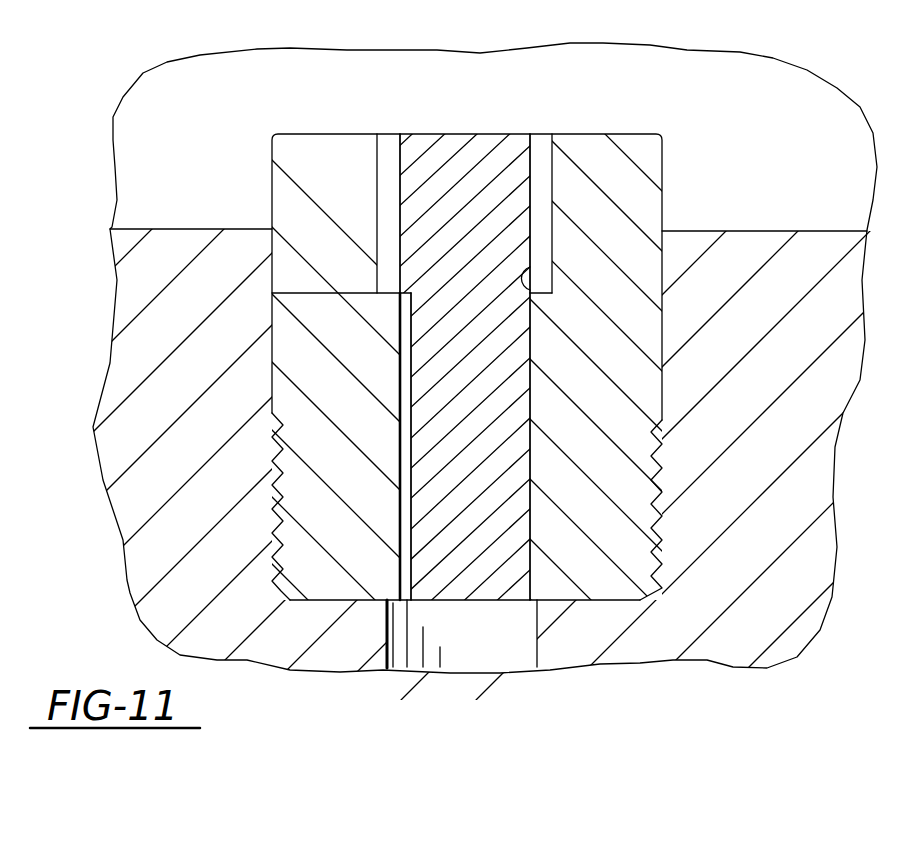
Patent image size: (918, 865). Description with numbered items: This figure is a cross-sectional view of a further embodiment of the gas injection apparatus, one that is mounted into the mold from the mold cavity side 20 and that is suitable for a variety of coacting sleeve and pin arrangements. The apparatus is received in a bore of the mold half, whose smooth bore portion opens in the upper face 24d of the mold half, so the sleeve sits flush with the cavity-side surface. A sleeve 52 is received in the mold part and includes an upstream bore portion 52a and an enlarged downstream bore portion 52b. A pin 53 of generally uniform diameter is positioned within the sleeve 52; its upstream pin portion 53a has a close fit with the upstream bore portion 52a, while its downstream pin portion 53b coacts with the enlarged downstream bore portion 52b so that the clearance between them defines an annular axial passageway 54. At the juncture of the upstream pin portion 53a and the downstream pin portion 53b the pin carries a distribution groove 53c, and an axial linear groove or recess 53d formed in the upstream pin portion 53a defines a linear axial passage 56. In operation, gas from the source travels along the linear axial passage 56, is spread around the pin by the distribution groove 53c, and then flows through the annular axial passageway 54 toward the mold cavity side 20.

The mold cavity side 20 is at (692, 78).
The upper face of mold half 24d is at (137, 229).
The sleeve 52 is at (323, 118).
The upstream bore portion 52a is at (400, 364).
The enlarged downstream bore portion 52b is at (377, 222).
The pin 53 is at (474, 115).
The upstream pin portion 53a is at (512, 487).
The downstream pin portion 53b is at (517, 197).
The distribution groove 53c is at (400, 264).
The axial linear groove 53d is at (403, 470).
The annular axial passageway 54 is at (541, 145).
The linear axial passage 56 is at (405, 593).